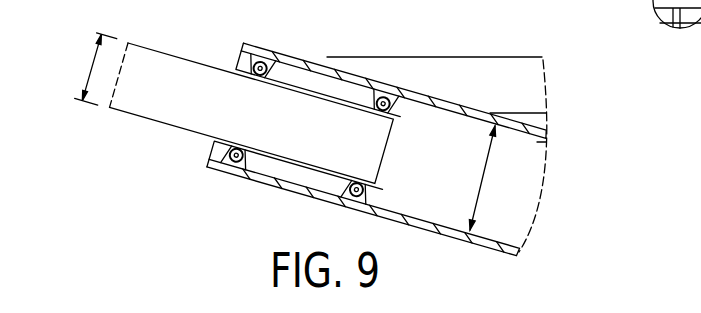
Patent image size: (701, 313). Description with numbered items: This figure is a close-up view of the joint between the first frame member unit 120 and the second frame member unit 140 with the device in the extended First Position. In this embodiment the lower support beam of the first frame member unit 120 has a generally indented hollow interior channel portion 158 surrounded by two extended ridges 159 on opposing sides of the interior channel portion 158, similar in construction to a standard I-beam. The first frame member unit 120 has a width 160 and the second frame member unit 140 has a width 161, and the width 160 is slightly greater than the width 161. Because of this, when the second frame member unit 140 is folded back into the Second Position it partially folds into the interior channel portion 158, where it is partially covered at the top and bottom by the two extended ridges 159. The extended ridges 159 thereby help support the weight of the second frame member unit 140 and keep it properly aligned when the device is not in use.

The first frame member unit 120 is at (268, 186).
The second frame member unit 140 is at (151, 113).
The generally indented hollow interior channel portion 158 is at (418, 199).
The extended ridges 159 is at (439, 100).
The width of the first frame member unit 160 is at (483, 178).
The width of the second frame member unit 161 is at (90, 65).